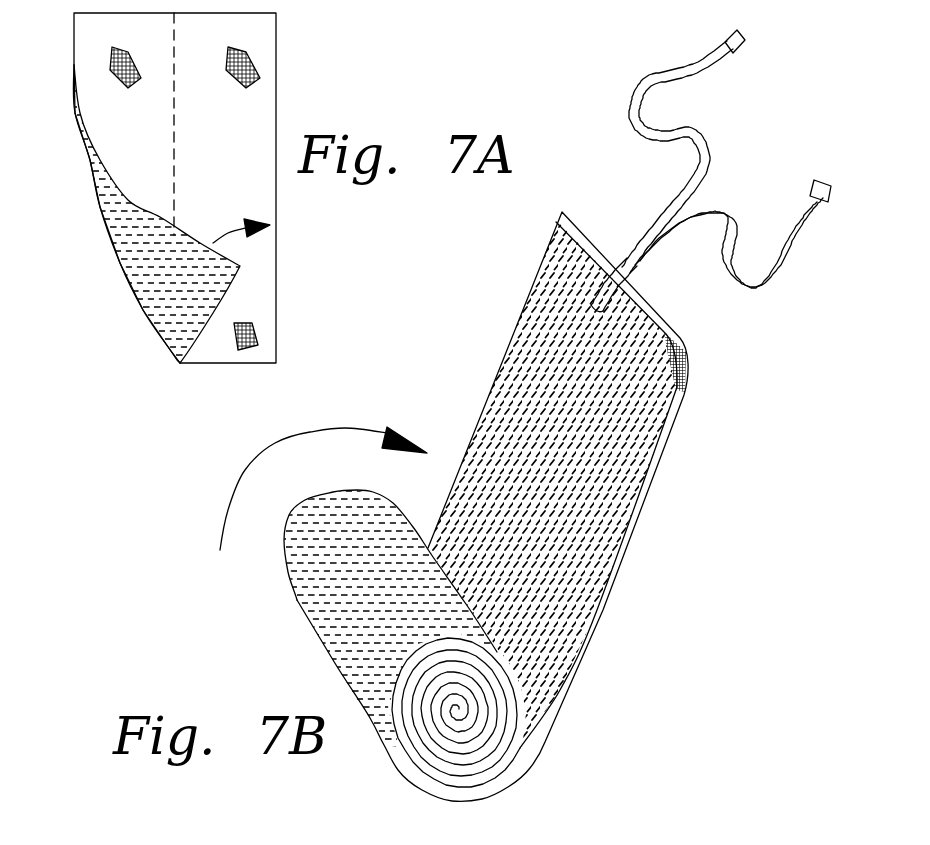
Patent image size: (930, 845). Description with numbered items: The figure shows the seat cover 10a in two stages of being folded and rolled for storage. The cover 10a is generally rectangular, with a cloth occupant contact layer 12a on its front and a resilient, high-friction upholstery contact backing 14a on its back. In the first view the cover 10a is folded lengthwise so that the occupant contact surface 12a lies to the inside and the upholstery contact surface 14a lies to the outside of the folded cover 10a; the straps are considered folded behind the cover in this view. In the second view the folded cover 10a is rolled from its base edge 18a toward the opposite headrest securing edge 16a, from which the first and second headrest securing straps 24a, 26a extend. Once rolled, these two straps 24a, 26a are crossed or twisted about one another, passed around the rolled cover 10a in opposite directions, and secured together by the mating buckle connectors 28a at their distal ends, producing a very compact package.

In FIG. 7A, the cover 10a is at (96, 298).
In FIG. 7B, the cover 10a is at (282, 652).
In FIG. 7A, the occupant contact layer 12a is at (110, 108).
In FIG. 7A, the upholstery contact backing 14a is at (128, 224).
In FIG. 7B, the upholstery contact backing 14a is at (527, 388).
In FIG. 7B, the headrest securing edge 16a is at (610, 245).
In FIG. 7B, the base edge 18a is at (446, 703).
In FIG. 7B, the first headrest securing strap 24a is at (760, 283).
In FIG. 7B, the second headrest securing strap 26a is at (632, 112).
In FIG. 7B, the mating buckle connectors 28a is at (813, 177).